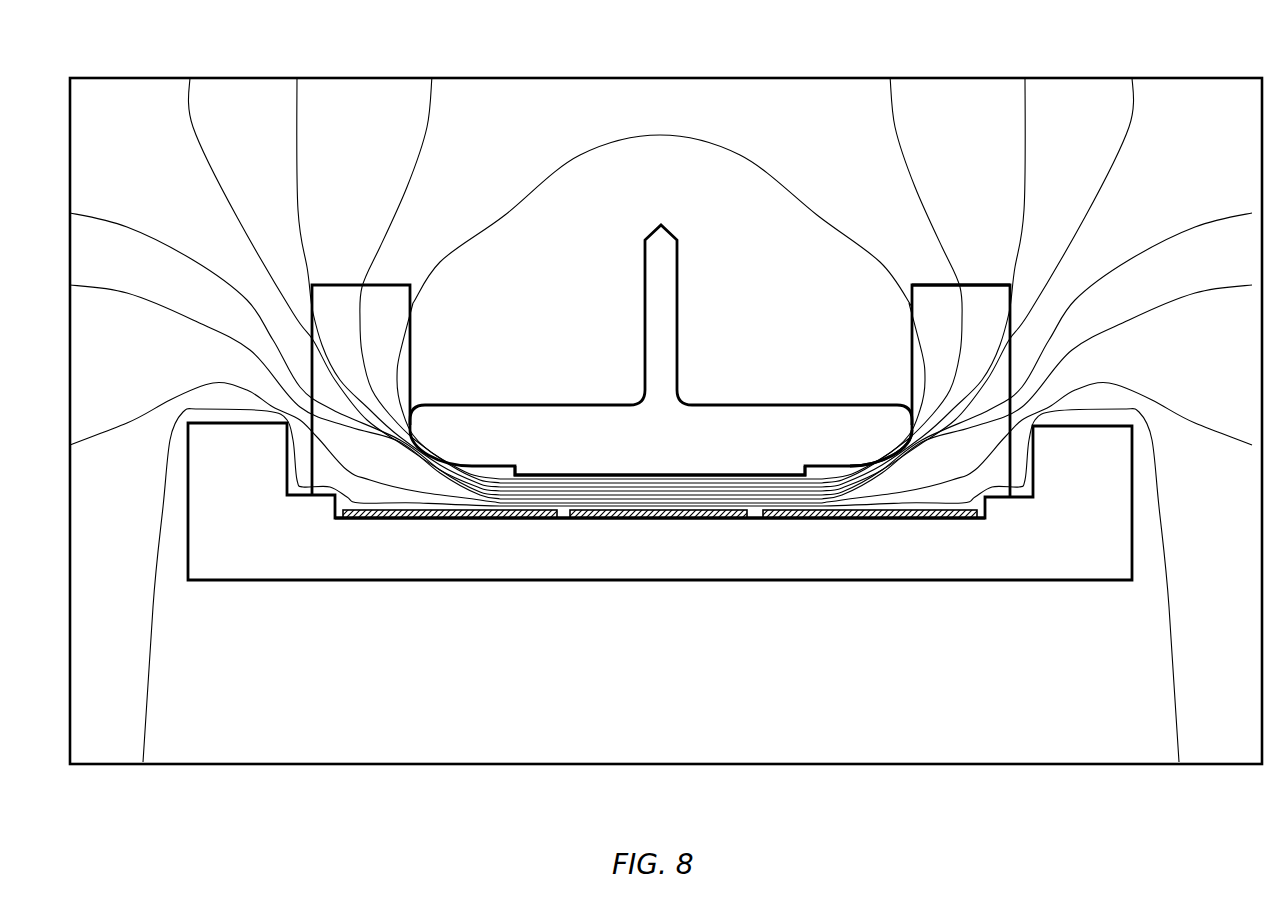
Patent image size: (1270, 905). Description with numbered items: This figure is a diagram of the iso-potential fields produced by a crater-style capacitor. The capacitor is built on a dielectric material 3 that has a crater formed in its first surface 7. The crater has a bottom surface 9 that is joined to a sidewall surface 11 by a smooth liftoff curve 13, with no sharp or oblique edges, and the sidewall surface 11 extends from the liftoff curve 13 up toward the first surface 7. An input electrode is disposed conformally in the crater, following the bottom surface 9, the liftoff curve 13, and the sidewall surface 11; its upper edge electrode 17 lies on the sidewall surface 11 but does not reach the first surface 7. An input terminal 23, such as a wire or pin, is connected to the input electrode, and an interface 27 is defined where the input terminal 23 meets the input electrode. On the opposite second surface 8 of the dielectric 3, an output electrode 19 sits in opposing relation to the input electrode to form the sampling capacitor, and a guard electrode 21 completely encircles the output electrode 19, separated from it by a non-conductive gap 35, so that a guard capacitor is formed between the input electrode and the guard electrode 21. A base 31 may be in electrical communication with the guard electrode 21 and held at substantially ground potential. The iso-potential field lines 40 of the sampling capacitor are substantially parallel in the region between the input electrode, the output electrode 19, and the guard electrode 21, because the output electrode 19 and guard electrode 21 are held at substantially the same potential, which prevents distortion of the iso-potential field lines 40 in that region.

The dielectric material 3 is at (990, 305).
The first surface 7 is at (973, 285).
The second surface 8 is at (558, 520).
The bottom surface 9 is at (825, 467).
The sidewall surface 11 is at (413, 338).
The liftoff curve 13 is at (895, 445).
The upper edge electrode 17 is at (417, 400).
The output electrode 19 is at (672, 520).
The guard electrode 21 is at (430, 515).
The input terminal 23 is at (664, 222).
The interface 27 is at (683, 393).
The base 31 is at (1058, 545).
The non-conductive gap 35 is at (753, 518).
The iso-potential field lines 40 is at (497, 490).